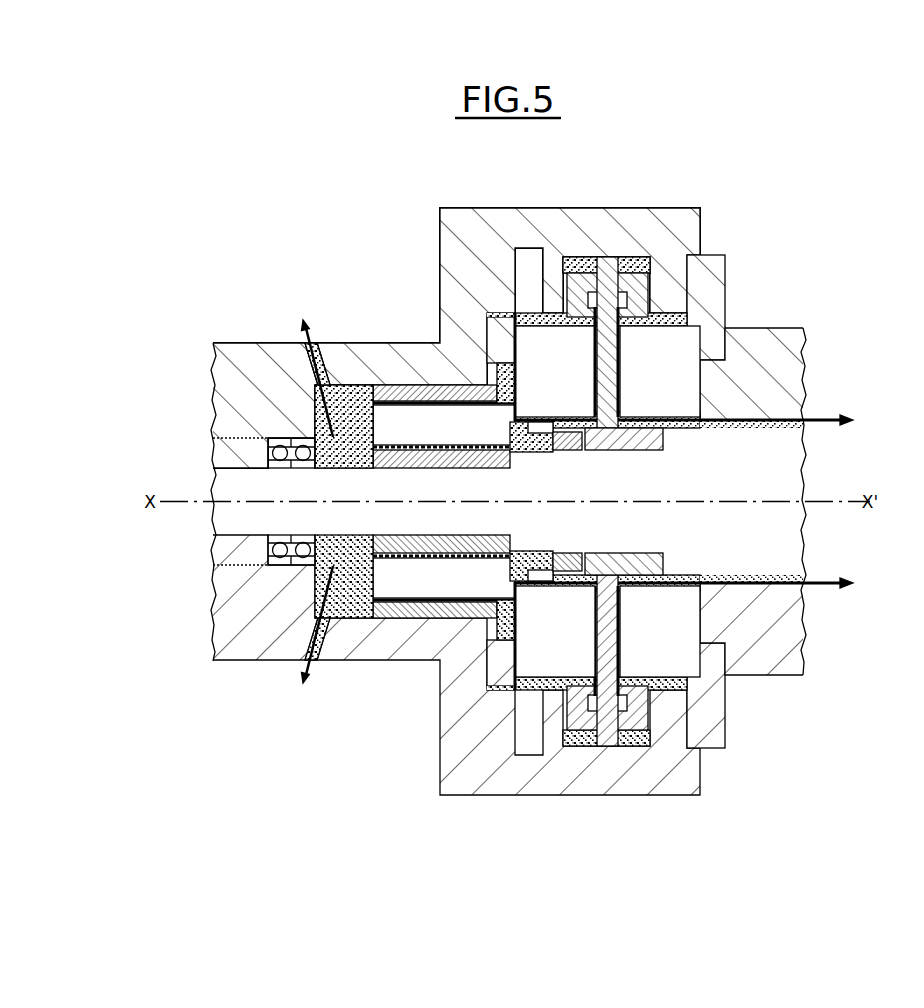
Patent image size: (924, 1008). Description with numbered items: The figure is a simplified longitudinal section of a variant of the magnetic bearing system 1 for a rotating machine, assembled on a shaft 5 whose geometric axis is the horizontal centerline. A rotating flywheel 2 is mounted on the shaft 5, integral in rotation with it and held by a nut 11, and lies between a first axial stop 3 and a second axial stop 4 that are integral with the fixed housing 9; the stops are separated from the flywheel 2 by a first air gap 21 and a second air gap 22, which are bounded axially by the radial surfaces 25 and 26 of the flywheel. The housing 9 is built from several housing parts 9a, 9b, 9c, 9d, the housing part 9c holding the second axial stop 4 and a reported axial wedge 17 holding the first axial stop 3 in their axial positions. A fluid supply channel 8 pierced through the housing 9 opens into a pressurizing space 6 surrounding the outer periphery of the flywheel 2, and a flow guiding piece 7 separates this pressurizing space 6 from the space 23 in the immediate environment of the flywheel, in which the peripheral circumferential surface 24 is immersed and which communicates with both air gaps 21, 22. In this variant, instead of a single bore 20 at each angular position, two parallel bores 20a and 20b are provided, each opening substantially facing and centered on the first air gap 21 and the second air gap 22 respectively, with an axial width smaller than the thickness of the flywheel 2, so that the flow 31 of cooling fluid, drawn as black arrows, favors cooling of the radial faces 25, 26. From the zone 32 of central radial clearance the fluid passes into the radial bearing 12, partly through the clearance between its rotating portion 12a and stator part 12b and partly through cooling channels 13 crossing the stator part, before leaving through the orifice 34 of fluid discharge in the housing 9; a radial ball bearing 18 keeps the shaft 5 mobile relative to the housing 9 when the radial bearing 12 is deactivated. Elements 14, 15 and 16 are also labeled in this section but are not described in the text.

The magnetic bearing system 1 is at (460, 460).
The rotating flywheel 2 is at (553, 650).
The first axial stop 3 is at (700, 664).
The second axial stop 4 is at (668, 617).
The shaft 5 is at (213, 482).
The pressurizing space 6 is at (648, 258).
The flow guiding piece 7 is at (655, 275).
The fluid supply channel 8 is at (612, 255).
The housing 9 is at (549, 220).
The housing part 9a is at (350, 348).
The housing part 9b is at (556, 217).
The housing part 9c is at (722, 290).
The housing part 9d is at (803, 372).
The nut 11 is at (567, 452).
The radial bearing 12 is at (306, 471).
The rotating portion 12a is at (393, 425).
The stator part 12b is at (316, 392).
The cooling channels 13 is at (380, 384).
The insulating member 14 is at (363, 614).
The sensor unit 15 is at (699, 639).
The spacer block 16 is at (487, 634).
The reported axial wedge 17 is at (492, 335).
The radial ball bearing 18 is at (280, 552).
The bores 20 is at (528, 272).
The first bore 20a is at (606, 264).
The second bore 20b is at (650, 268).
The first air gap 21 is at (592, 390).
The second air gap 22 is at (622, 390).
The space in the immediate environment of the flywheel 23 is at (668, 692).
The peripheral circumferential surface 24 is at (566, 748).
The radial surface 25 is at (592, 352).
The radial surface 26 is at (622, 352).
The flow of cooling fluid 31 is at (624, 272).
The zone of central radial clearance 32 is at (450, 390).
The orifice of fluid discharge 34 is at (306, 352).